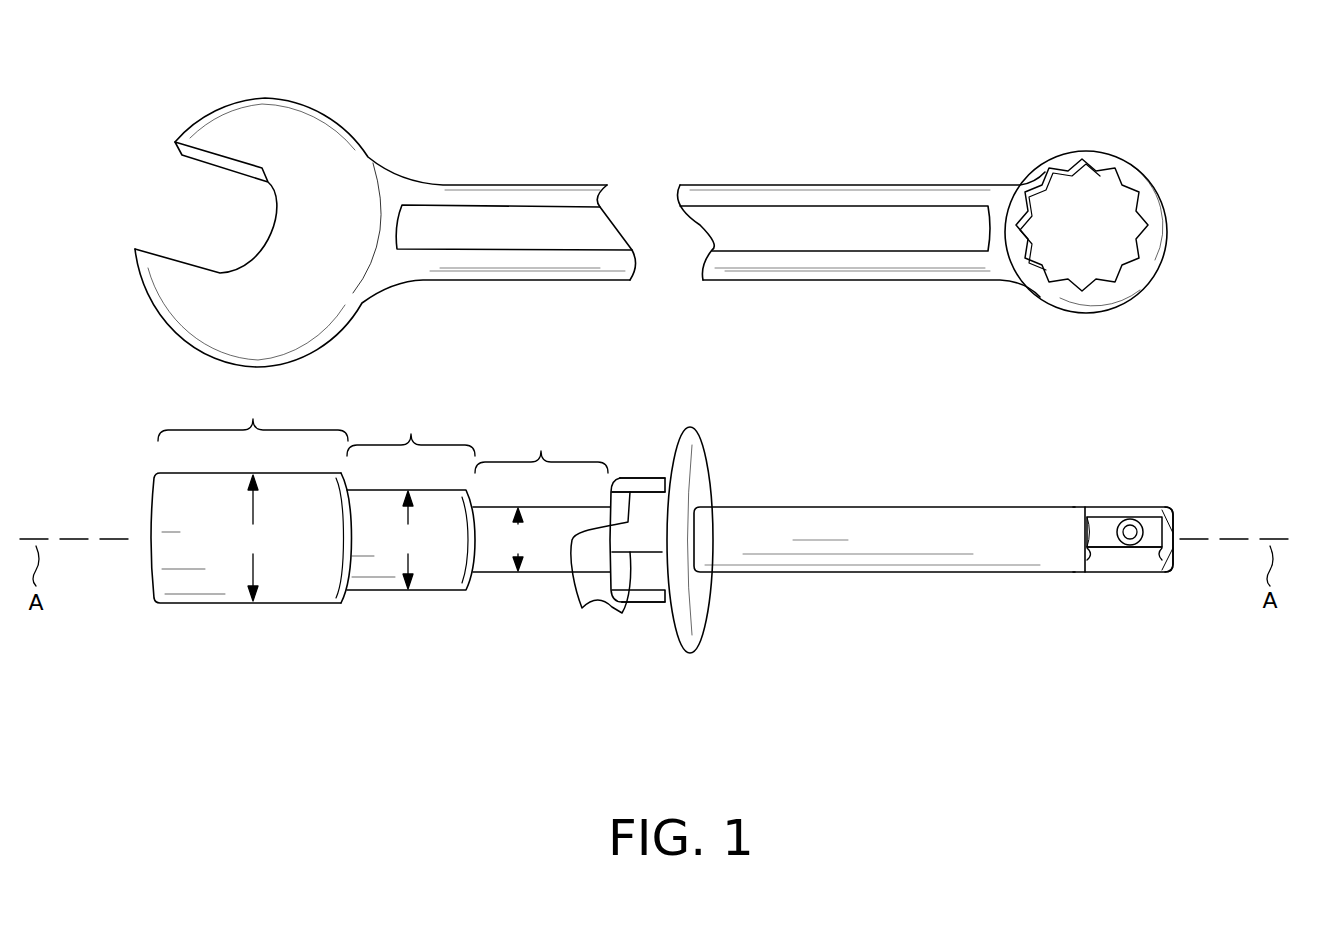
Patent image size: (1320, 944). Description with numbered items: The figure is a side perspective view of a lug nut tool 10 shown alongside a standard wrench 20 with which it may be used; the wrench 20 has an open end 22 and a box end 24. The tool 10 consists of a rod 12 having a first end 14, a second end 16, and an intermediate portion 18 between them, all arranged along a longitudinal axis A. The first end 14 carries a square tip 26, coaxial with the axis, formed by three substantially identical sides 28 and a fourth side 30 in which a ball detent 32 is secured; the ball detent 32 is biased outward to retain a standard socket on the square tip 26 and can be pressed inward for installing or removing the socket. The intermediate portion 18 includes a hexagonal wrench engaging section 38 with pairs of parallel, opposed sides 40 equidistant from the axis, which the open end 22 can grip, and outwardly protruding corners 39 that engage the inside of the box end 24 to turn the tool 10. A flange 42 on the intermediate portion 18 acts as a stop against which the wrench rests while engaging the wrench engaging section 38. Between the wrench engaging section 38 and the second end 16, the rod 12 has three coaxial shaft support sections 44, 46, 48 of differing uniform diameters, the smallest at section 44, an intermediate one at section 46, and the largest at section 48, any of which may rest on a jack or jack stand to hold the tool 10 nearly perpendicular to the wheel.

The tool 10 is at (687, 554).
The rod 12 is at (920, 530).
The first end 14 is at (1125, 551).
The second end 16 is at (251, 568).
The intermediate portion 18 is at (660, 554).
The wrench 20 is at (654, 206).
The open end 22 is at (302, 243).
The box end 24 is at (1100, 163).
The square tip 26 is at (1172, 527).
The sides 28 is at (1128, 552).
The fourth side 30 is at (1102, 525).
The ball detent 32 is at (1133, 527).
The wrench engaging section 38 is at (652, 515).
The corners 39 is at (596, 601).
The parallel, opposed sides 40 is at (640, 482).
The flange 42 is at (700, 478).
The shaft support section 44 is at (541, 498).
The shaft support section 46 is at (411, 499).
The shaft support section 48 is at (253, 417).